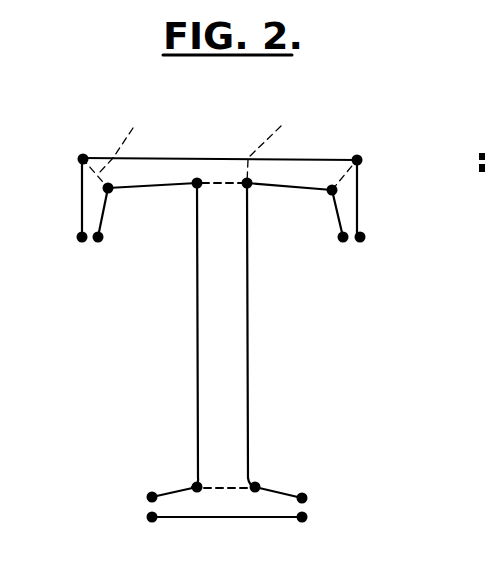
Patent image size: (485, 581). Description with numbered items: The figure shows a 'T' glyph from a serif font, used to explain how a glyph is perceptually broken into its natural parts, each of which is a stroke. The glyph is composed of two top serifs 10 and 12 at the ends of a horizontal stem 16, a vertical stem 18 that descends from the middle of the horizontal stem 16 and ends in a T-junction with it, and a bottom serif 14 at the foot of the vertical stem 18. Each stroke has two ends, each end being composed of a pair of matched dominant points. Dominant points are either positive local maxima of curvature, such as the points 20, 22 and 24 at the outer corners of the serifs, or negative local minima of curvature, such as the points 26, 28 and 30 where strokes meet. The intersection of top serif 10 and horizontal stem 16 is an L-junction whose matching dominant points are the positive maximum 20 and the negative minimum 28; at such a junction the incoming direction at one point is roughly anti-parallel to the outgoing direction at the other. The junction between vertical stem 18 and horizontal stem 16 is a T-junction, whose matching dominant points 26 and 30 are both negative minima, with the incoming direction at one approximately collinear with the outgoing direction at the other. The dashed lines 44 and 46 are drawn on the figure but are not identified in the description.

The top serif 10 is at (86, 208).
The top serif 12 is at (347, 199).
The bottom serif 14 is at (230, 505).
The horizontal stem 16 is at (187, 157).
The vertical stem 18 is at (235, 327).
The dominant point 20 is at (80, 155).
The dominant point 22 is at (361, 157).
The dominant point 24 is at (363, 240).
The dominant point 26 is at (195, 187).
The dominant point 28 is at (112, 192).
The dominant point 30 is at (250, 187).
The weld 44 is at (118, 143).
The weld 46 is at (301, 144).